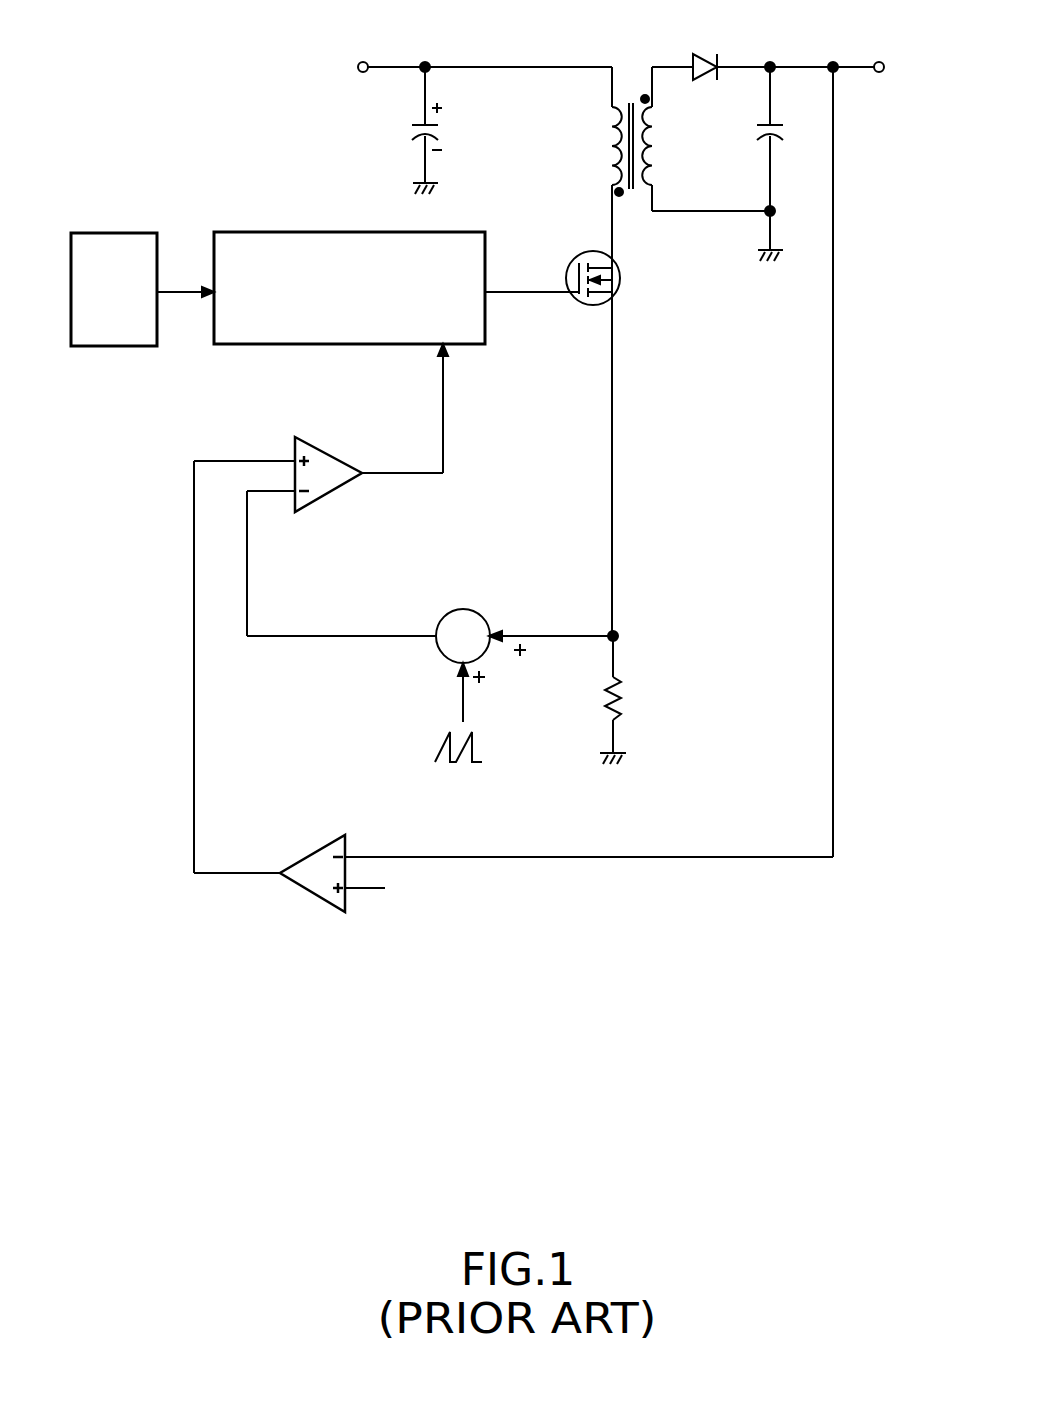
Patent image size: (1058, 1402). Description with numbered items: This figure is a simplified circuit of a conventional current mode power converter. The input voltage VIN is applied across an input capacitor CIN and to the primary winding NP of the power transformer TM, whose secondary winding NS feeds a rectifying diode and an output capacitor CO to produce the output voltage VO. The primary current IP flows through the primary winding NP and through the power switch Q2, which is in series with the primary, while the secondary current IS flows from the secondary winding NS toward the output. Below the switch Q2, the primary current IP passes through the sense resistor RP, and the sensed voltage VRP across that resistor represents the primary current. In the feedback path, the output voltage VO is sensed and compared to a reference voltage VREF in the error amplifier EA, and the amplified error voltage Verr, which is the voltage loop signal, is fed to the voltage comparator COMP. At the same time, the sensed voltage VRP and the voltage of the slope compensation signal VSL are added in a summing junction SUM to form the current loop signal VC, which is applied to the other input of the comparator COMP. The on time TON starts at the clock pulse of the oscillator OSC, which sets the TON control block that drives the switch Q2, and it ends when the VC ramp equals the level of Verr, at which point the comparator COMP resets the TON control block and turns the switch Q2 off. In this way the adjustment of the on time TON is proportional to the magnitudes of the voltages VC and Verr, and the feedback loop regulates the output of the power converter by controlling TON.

The input voltage VIN is at (335, 71).
The input capacitor CIN is at (452, 130).
The power transformer TM is at (629, 110).
The primary turn ratio of TM NP is at (594, 151).
The secondary turn ratio of TM NS is at (667, 140).
The secondary current of TM IS is at (742, 32).
The output voltage VO is at (905, 71).
The output capacitor CO is at (786, 164).
The oscillator OSC is at (114, 289).
The on time TON is at (349, 289).
The power switch Q2 is at (579, 299).
The primary current of TM IP is at (642, 263).
The voltage comparator COMP is at (351, 481).
The output voltage of the error amplifier Verr is at (228, 437).
The summing junction SUM is at (481, 646).
The sensed voltage of resistor RP VRP is at (551, 618).
The current loop signal VC is at (355, 664).
The voltage of slope compensation signal VSL is at (490, 721).
The resistor RP is at (632, 700).
The error amplifier EA is at (344, 894).
The reference voltage VREF is at (403, 891).